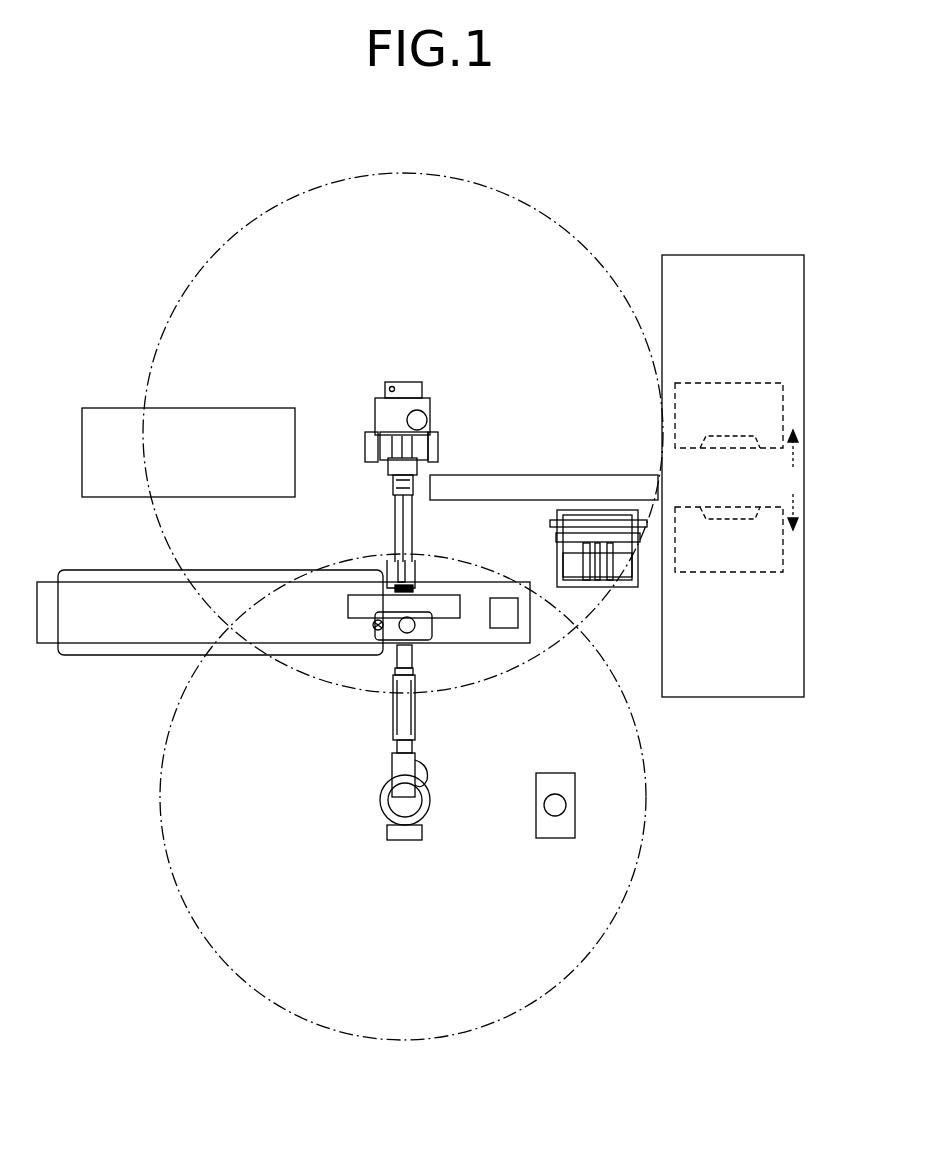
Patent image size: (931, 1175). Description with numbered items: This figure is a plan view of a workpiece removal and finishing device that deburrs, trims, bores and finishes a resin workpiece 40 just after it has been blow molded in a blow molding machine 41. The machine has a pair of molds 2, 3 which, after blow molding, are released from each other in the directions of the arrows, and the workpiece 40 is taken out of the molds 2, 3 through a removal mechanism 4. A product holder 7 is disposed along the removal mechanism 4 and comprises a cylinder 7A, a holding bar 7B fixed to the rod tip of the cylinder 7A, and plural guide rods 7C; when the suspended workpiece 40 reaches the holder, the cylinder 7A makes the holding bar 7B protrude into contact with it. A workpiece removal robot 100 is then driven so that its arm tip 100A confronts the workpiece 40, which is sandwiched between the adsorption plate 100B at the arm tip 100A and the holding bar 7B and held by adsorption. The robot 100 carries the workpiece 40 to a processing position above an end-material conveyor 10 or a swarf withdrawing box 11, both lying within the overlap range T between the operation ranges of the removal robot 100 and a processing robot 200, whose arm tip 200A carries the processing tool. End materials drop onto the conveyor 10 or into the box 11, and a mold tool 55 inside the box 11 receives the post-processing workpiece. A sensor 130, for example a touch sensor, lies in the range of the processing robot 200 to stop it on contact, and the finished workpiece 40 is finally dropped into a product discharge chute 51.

The mold 2 is at (777, 418).
The mold 3 is at (777, 548).
The removal mechanism 4 is at (475, 483).
The product holder 7 is at (577, 494).
The cylinder 7A is at (555, 522).
The holding bar 7B is at (585, 540).
The guide rods 7C is at (598, 598).
The end-material conveyor 10 is at (95, 635).
The swarf withdrawing box 11 is at (490, 598).
The workpiece 40 is at (398, 640).
The blow molding machine 41 is at (806, 333).
The product discharge chute 51 is at (100, 415).
The mold tool 55 is at (508, 642).
The workpiece removal robot 100 is at (350, 446).
The arm tip 100A is at (388, 563).
The adsorption plate 100B is at (387, 578).
The sensor 130 is at (555, 838).
The processing robot 200 is at (354, 774).
The arm tip 200A is at (398, 665).
The overlap range T is at (445, 660).